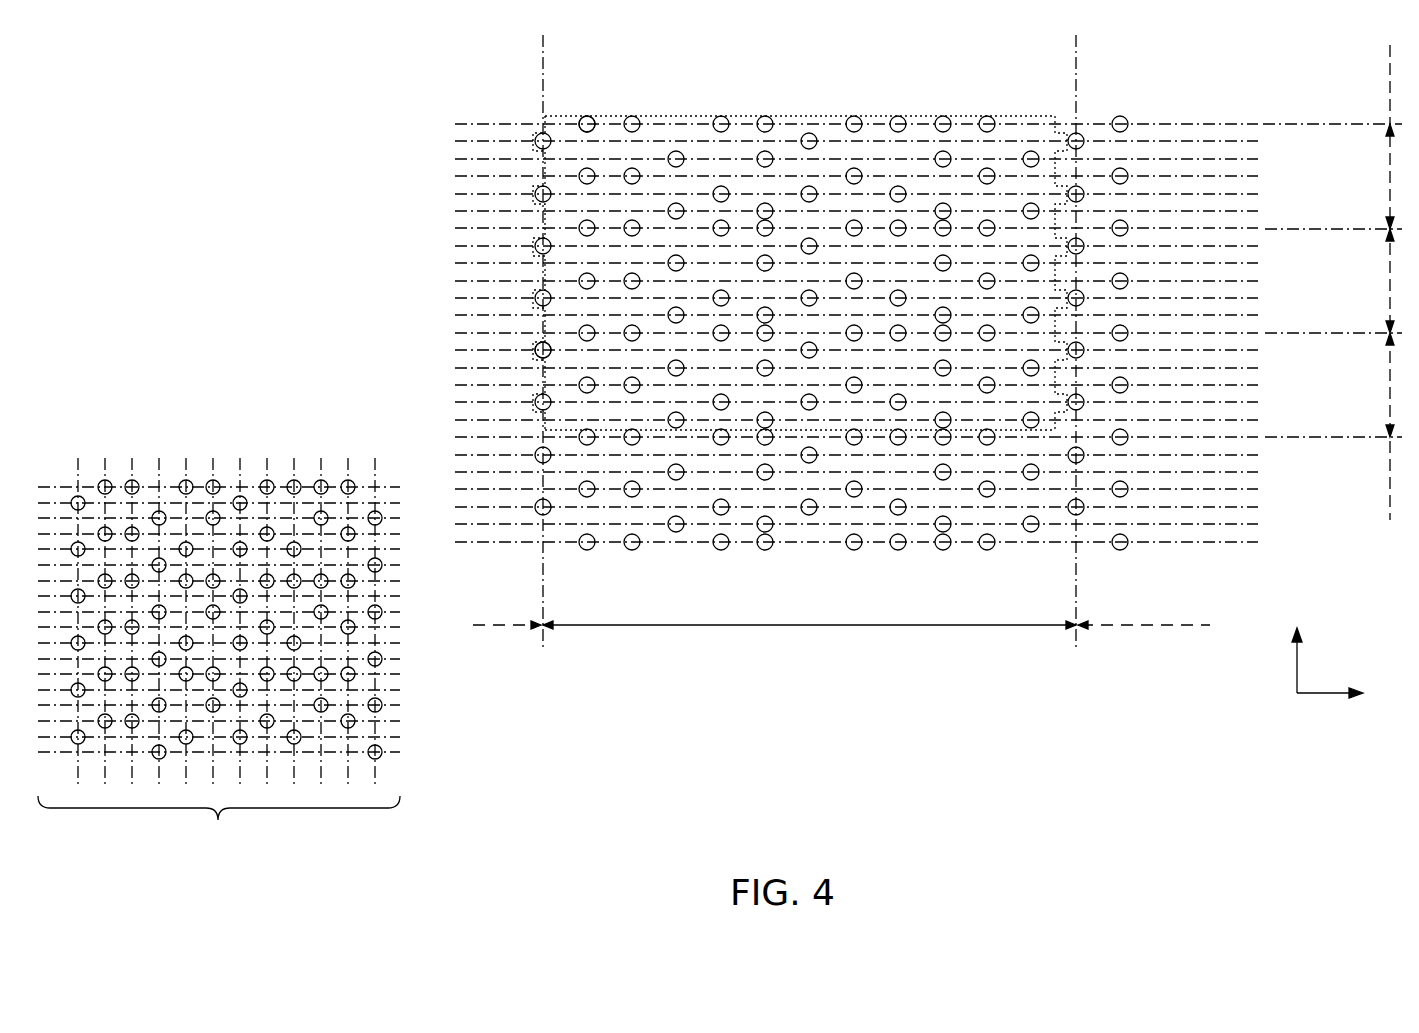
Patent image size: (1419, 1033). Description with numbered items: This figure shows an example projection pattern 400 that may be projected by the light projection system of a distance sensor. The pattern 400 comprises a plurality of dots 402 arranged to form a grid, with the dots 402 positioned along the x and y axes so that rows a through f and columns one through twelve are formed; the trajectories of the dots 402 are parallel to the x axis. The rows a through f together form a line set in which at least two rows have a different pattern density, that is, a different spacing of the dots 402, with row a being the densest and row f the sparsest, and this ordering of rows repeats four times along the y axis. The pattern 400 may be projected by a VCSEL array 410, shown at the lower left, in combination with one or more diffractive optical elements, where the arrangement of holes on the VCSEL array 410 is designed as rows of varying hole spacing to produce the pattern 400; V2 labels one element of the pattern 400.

The projection pattern 400 is at (130, 48).
The dot 402 is at (592, 116).
The VCSEL array 410 is at (219, 668).
The VCSEL V2 is at (534, 367).